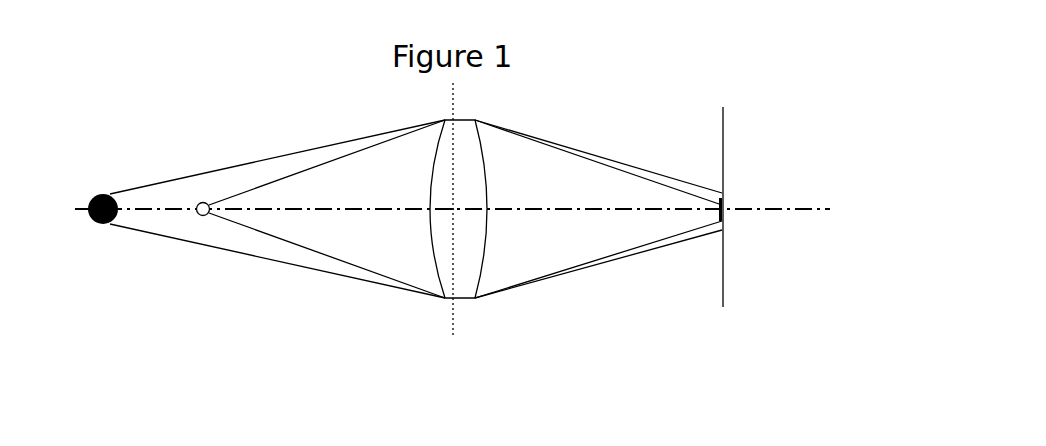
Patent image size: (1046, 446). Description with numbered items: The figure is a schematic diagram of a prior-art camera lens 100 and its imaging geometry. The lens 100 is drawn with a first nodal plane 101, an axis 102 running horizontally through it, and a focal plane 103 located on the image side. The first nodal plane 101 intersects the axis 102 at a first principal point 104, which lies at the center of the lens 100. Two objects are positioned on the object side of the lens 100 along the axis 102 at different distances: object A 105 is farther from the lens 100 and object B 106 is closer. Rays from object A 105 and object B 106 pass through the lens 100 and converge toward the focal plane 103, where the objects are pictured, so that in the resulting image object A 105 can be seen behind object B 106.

The lens 100 is at (480, 265).
The first nodal plane 101 is at (457, 240).
The axis 102 is at (471, 211).
The focal plane 103 is at (749, 232).
The first principal point 104 is at (452, 208).
The object A 105 is at (104, 224).
The object B 106 is at (196, 215).